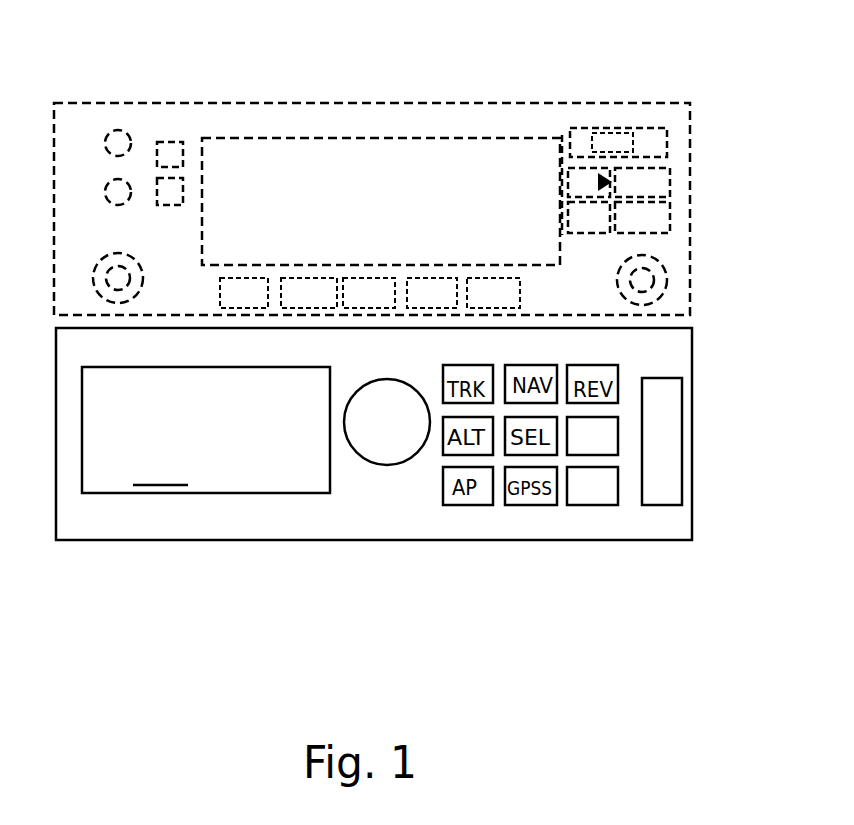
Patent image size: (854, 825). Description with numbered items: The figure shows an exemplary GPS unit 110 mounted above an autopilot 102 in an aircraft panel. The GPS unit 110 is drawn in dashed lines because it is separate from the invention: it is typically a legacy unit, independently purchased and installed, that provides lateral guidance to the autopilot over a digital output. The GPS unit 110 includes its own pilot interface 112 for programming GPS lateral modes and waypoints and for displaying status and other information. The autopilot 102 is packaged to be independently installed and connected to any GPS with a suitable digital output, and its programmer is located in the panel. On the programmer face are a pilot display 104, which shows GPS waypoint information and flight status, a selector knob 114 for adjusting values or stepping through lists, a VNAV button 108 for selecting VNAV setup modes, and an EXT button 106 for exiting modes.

The autopilot 102 is at (377, 540).
The pilot display 104 is at (205, 493).
The EXT button 106 is at (615, 505).
The VNAV button 108 is at (603, 430).
The GPS unit 110 is at (342, 103).
The pilot interface 112 is at (478, 138).
The selector knob 114 is at (395, 447).